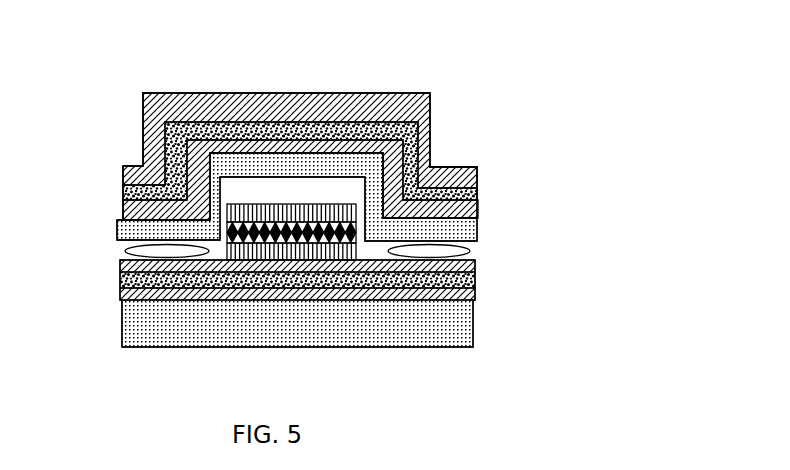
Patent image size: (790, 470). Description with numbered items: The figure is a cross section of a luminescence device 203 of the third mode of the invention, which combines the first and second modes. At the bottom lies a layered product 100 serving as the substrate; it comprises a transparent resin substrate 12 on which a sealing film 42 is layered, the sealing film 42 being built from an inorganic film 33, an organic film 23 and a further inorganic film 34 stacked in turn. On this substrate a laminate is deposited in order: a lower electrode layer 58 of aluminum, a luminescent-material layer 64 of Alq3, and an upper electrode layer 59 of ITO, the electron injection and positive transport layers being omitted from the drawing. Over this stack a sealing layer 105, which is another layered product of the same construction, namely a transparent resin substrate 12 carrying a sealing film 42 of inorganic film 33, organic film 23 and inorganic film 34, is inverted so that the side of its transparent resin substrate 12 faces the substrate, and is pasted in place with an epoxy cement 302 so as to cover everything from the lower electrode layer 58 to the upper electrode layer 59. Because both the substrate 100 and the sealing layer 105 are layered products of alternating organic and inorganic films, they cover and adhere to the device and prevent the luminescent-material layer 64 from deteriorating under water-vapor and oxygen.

The luminescence device 203 is at (185, 49).
The sealing layer 105 is at (117, 93).
The sealing film 42 is at (533, 62).
The inorganic film 34 is at (367, 110).
The organic film 23 is at (432, 123).
The inorganic film 33 is at (423, 162).
The transparent resin substrate 12 is at (473, 180).
The upper electrode layer 59 is at (335, 215).
The luminescent-material layer 64 is at (323, 232).
The epoxy cement 302 is at (430, 250).
The lower electrode layer 58 is at (335, 255).
The layered product 100 is at (578, 413).